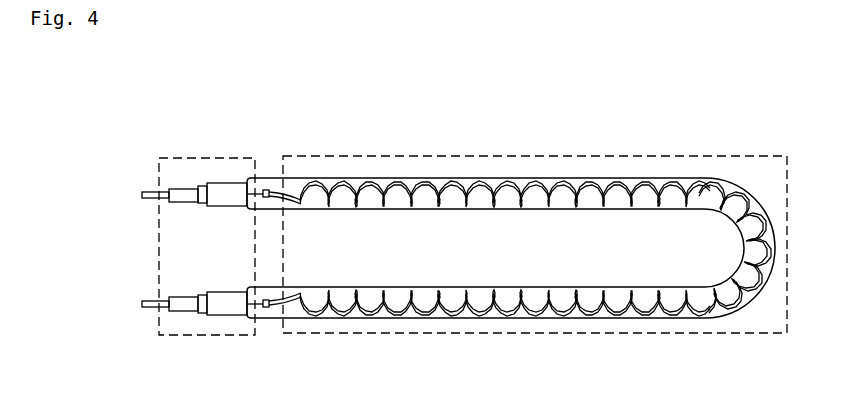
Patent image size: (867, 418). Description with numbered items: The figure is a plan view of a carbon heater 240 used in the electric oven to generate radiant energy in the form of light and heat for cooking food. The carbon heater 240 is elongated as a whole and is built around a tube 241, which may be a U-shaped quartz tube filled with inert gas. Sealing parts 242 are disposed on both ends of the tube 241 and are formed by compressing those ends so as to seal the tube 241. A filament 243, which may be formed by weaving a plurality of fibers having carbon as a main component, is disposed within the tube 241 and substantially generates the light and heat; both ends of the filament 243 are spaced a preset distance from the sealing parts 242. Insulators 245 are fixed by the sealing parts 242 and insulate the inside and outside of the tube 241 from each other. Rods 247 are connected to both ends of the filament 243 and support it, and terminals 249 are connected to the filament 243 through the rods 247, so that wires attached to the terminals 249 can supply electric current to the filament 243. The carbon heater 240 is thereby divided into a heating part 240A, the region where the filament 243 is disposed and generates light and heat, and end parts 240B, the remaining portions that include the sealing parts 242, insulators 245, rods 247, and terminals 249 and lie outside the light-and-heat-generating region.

The carbon heater 240 is at (437, 124).
The heating part 240A is at (465, 335).
The end parts 240B is at (238, 336).
The tube 241 is at (270, 177).
The sealing parts 242 is at (231, 181).
The filament 243 is at (612, 185).
The insulators 245 is at (185, 312).
The rods 247 is at (267, 312).
The terminals 249 is at (148, 299).